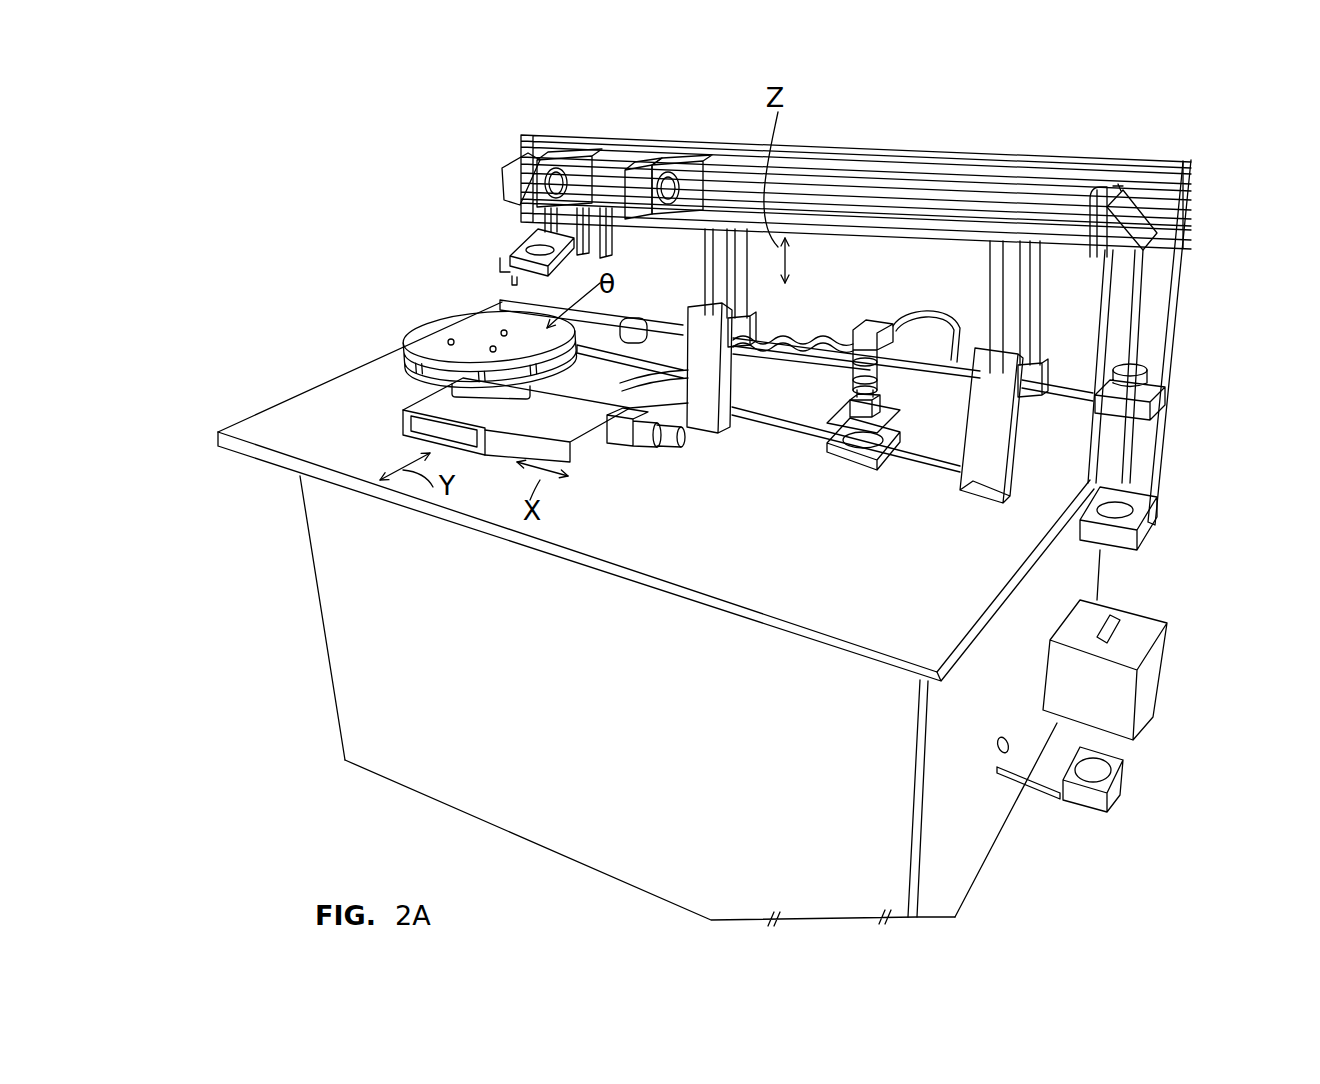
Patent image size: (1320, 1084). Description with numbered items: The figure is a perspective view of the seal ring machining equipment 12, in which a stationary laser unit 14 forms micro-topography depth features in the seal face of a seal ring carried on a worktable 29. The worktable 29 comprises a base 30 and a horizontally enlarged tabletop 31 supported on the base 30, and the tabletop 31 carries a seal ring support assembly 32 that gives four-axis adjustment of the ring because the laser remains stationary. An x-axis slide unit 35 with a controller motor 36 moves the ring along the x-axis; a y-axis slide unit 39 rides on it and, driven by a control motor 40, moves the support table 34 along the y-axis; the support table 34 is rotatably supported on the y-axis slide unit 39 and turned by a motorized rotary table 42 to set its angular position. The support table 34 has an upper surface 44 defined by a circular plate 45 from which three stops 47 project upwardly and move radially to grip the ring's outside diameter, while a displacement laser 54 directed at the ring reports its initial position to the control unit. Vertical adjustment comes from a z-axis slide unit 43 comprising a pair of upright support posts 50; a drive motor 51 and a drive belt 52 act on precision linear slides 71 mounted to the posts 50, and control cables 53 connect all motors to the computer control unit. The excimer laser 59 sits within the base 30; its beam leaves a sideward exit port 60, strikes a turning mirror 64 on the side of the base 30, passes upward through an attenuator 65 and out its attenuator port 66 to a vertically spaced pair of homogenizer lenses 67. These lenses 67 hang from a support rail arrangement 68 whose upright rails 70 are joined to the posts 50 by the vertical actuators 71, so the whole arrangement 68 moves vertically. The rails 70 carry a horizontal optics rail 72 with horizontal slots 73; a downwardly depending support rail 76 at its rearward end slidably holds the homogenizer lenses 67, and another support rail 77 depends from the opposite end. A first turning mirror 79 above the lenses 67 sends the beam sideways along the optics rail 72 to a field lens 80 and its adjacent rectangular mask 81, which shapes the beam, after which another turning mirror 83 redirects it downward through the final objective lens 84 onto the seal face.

The seal ring machining equipment 12 is at (216, 348).
The laser unit 14 is at (990, 857).
The worktable 29 is at (330, 700).
The base 30 is at (350, 617).
The tabletop 31 is at (300, 432).
The seal ring support assembly 32 is at (355, 487).
The support table 34 is at (395, 333).
The x-axis slide unit 35 is at (585, 444).
The controller motor 36 is at (652, 440).
The y-axis slide unit 39 is at (413, 408).
The control motor 40 is at (623, 327).
The motorized rotary table 42 is at (403, 437).
The z-axis slide unit 43 is at (837, 368).
The upper surface 44 is at (403, 333).
The circular plate 45 is at (418, 348).
The stops 47 is at (452, 339).
The upright support posts 50 is at (722, 436).
The drive motor 51 is at (873, 333).
The drive belt 52 is at (905, 460).
The control cables 53 is at (833, 340).
The displacement laser 54 is at (503, 332).
The excimer laser 59 is at (975, 884).
The laser beam exit port 60 is at (998, 748).
The turning mirror 64 is at (1113, 780).
The attenuator 65 is at (1153, 670).
The attenuator port 66 is at (1120, 617).
The homogenizer lenses 67 is at (1160, 400).
The support rail arrangement 68 is at (903, 147).
The upright rails 70 is at (740, 228).
The linear slides 71 is at (752, 340).
The optics rail 72 is at (1160, 173).
The horizontal slots 73 is at (1185, 240).
The support rail 76 is at (1170, 313).
The support rail 77 is at (507, 205).
The first turning mirror 79 is at (1118, 190).
The field lens 80 is at (687, 173).
The mask 81 is at (625, 173).
The turning mirror 83 is at (527, 137).
The final objective lens 84 is at (503, 270).